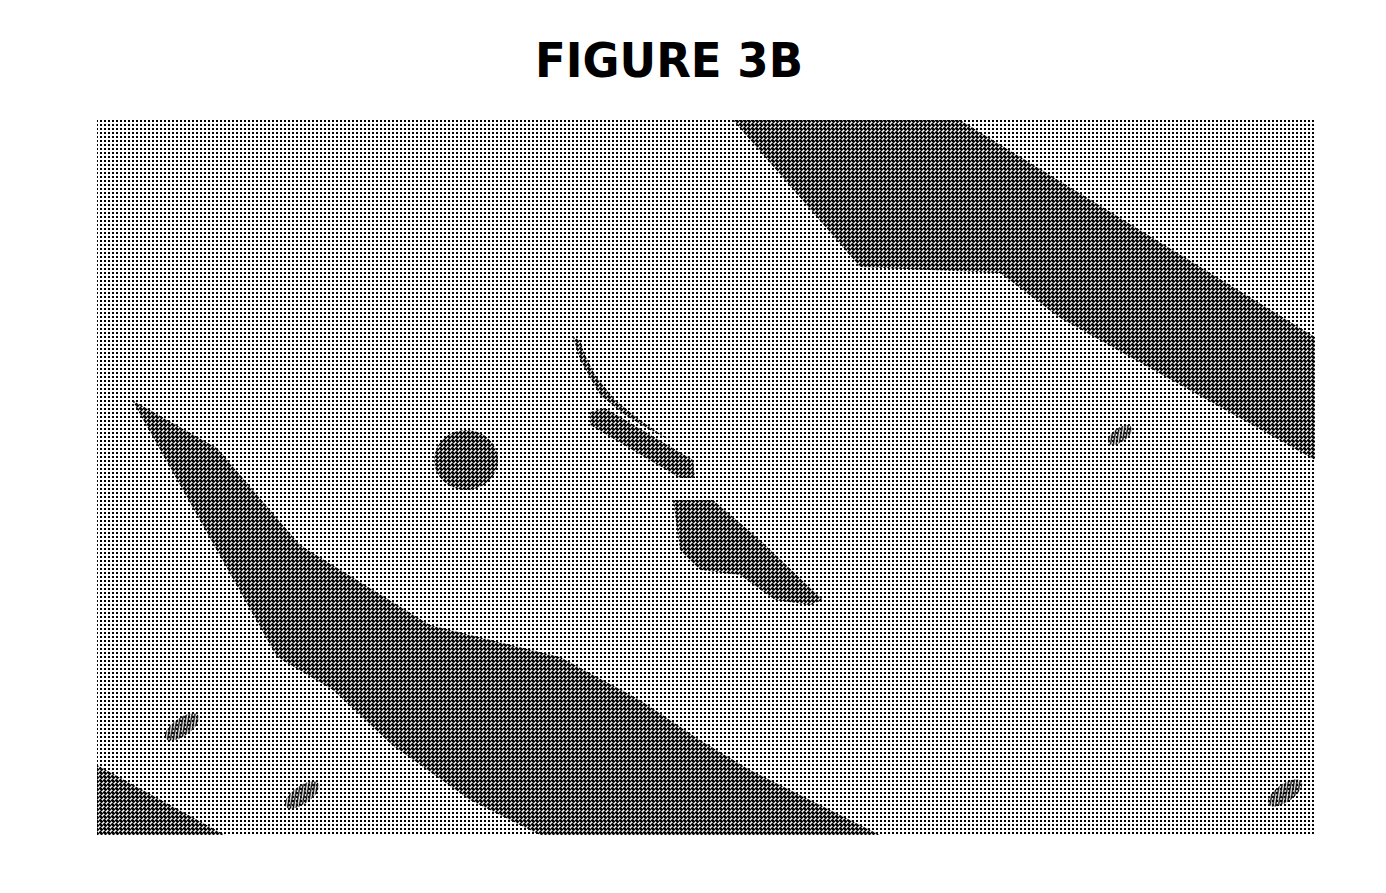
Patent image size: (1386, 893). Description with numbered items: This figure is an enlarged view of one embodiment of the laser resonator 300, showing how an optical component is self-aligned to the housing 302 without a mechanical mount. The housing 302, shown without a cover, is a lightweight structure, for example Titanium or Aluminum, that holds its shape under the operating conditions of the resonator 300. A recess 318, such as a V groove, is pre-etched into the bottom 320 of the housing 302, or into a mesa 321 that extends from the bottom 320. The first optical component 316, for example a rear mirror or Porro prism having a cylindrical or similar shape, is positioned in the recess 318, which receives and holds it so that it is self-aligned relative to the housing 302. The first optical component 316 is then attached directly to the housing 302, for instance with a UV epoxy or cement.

The laser resonator 300 is at (1252, 238).
The housing 302 is at (278, 548).
The first optical component 316 is at (733, 343).
The recess 318 is at (703, 450).
The bottom 320 is at (927, 392).
The mesa 321 is at (868, 488).